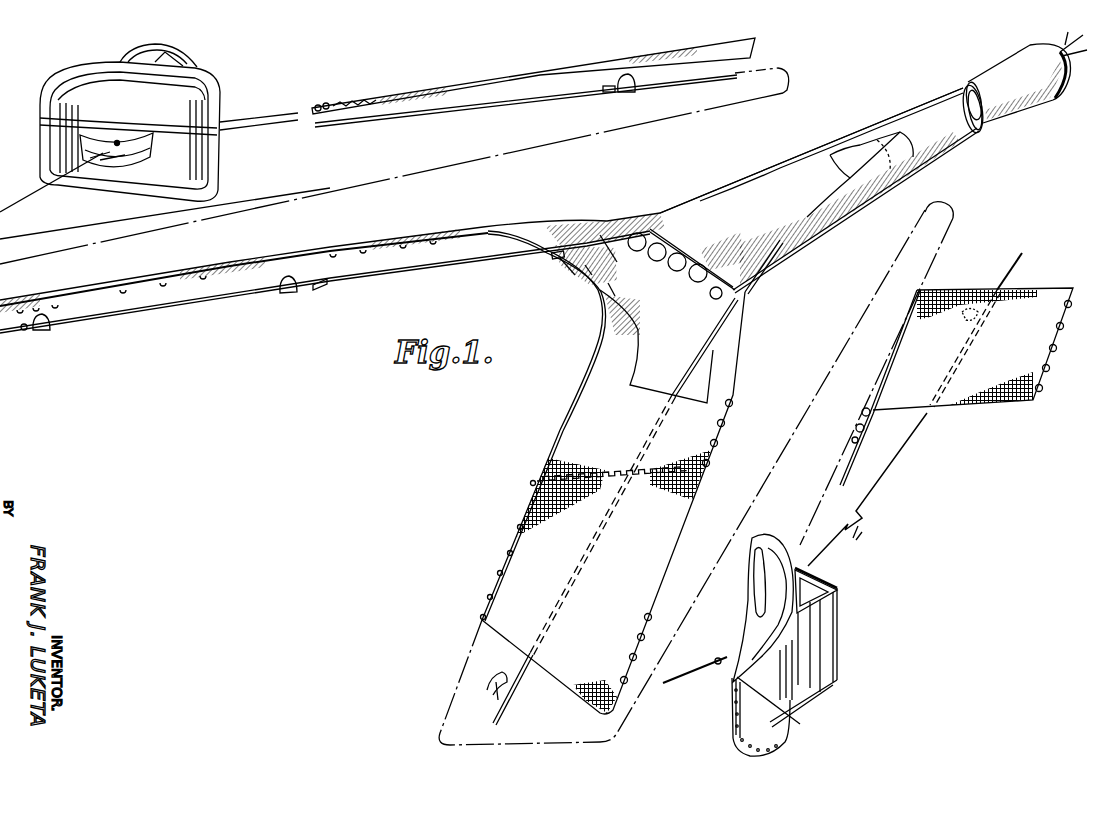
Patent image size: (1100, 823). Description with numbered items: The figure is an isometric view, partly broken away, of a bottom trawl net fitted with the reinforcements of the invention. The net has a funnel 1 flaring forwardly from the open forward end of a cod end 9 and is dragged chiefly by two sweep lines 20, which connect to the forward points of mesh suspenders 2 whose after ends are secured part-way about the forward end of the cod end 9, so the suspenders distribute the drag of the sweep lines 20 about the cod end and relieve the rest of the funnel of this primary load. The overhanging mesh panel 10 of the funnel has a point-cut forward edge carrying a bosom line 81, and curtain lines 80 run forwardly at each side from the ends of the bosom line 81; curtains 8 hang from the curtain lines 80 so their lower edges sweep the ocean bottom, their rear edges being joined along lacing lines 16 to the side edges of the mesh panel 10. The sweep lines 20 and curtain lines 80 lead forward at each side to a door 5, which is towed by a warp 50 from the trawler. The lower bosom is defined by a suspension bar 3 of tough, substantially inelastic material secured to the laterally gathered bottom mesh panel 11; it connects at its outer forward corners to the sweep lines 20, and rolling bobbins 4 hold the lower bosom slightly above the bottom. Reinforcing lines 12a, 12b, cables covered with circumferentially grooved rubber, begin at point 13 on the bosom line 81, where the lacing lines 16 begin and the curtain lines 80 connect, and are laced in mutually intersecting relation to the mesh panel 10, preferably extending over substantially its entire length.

The funnel 1 is at (753, 169).
The mesh suspenders 2 is at (667, 221).
The suspension bar 3 is at (712, 298).
The rolling bobbins 4 is at (688, 276).
The door 5 is at (193, 98).
The curtains 8 is at (567, 75).
The cod end 9 is at (935, 105).
The mesh panel 10 is at (590, 272).
The mesh panel 11 is at (747, 278).
The reinforcing line 12a is at (617, 262).
The reinforcing line 12b is at (563, 267).
The beginning point of reinforcing lines 13 is at (513, 236).
The lacing lines 16 is at (612, 283).
The sweep lines 20 is at (517, 100).
The towing warp 50 is at (677, 680).
The curtain lines 80 is at (445, 92).
The bosom line 81 is at (557, 258).